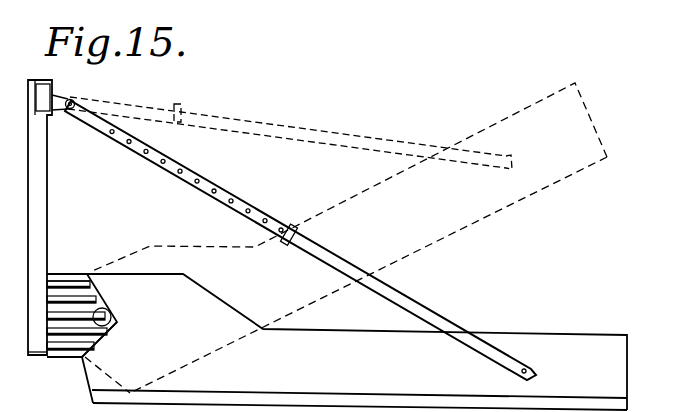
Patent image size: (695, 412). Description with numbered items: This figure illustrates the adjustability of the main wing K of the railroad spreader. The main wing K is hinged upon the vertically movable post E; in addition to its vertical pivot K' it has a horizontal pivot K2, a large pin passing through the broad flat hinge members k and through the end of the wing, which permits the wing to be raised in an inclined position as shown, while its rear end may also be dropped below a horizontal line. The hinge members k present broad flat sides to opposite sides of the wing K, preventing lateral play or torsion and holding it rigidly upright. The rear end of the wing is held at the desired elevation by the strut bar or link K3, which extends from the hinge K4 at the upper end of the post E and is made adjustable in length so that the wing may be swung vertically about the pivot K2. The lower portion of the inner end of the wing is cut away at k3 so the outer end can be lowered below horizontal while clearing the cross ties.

The post E is at (45, 233).
The main wing K is at (337, 246).
The vertical pivot K' is at (68, 264).
The horizontal pivot pin K2 is at (104, 317).
The strut bar K3 is at (192, 171).
The hinge K4 is at (55, 97).
The hinge members k is at (90, 300).
The cut-away portion k3 is at (81, 358).